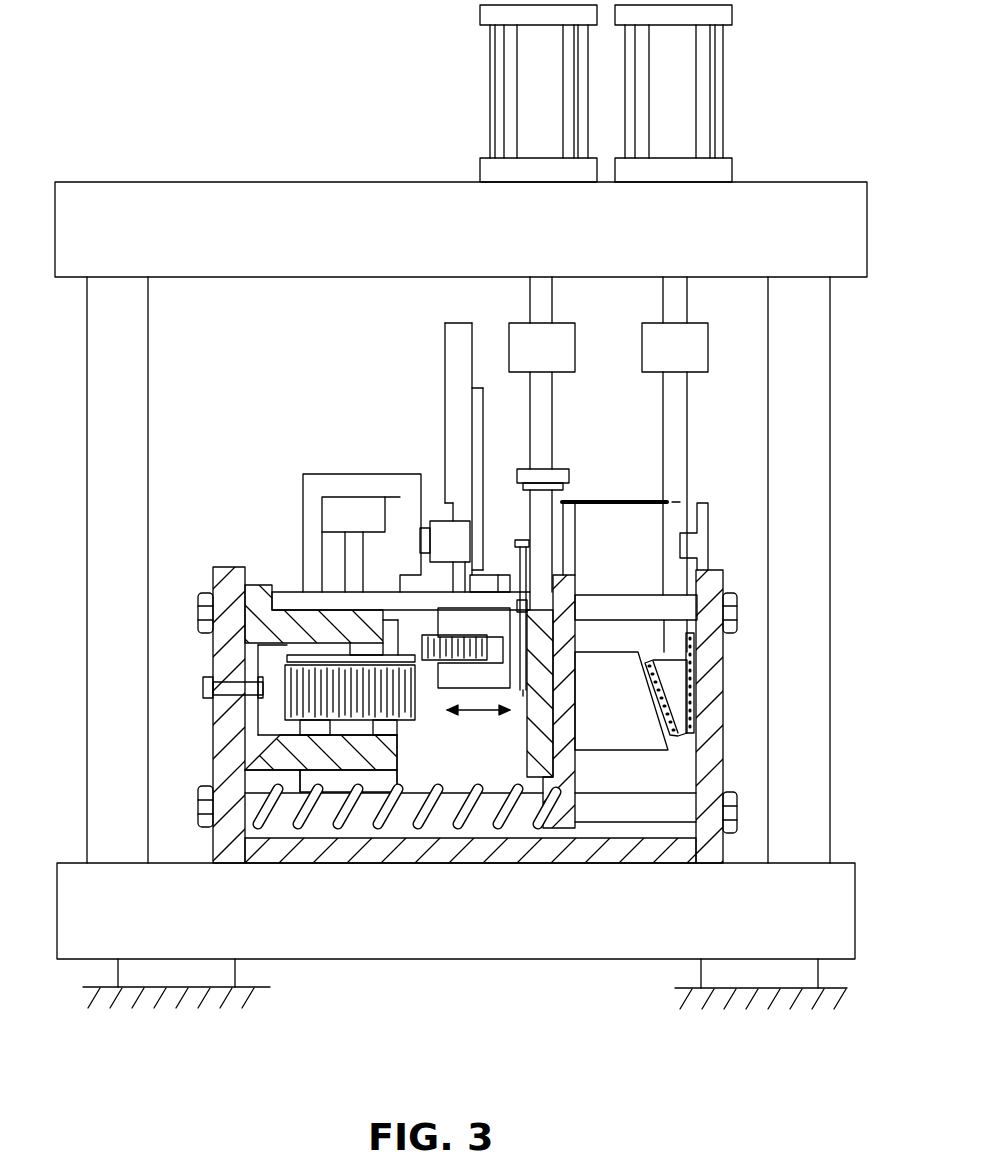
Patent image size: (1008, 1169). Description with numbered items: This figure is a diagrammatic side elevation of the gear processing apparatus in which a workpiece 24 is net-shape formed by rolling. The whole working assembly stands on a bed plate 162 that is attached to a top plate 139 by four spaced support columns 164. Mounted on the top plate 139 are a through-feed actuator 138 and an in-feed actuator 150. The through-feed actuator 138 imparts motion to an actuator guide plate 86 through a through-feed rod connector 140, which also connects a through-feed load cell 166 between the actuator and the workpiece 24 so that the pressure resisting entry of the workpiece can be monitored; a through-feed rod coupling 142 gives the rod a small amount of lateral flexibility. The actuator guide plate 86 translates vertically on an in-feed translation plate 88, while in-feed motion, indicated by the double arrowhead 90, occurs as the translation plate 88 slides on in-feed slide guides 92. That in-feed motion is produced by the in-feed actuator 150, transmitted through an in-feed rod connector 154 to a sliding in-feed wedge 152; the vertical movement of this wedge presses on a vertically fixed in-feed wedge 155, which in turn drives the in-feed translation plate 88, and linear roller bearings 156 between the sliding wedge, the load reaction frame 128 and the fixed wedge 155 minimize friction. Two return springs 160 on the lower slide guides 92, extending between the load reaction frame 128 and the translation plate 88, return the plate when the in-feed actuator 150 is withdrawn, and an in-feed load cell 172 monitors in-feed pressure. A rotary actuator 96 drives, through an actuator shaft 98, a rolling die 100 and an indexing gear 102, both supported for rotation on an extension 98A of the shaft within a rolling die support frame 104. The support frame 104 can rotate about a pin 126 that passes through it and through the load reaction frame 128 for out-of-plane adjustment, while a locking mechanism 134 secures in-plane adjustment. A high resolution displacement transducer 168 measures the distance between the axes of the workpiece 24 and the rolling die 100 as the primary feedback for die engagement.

The workpiece 24 is at (425, 657).
The actuator guide plate 86 is at (540, 768).
The in-feed translation plate 88 is at (561, 812).
The double arrowhead 90 is at (483, 712).
The in-feed slide guides 92 is at (607, 603).
The rotary actuator 96 is at (351, 507).
The actuator shaft 98 is at (353, 557).
The extension of the actuator shaft 98A is at (350, 652).
The rolling die 100 is at (400, 707).
The indexing gear 102 is at (287, 660).
The rolling die support frame 104 is at (282, 755).
The pin 126 is at (233, 689).
The load reaction frame 128 is at (233, 757).
The locking mechanism 134 is at (534, 565).
The through-feed actuator 138 is at (537, 79).
The top plate 139 is at (124, 219).
The through-feed rod connector 140 is at (540, 423).
The through-feed rod coupling 142 is at (553, 478).
The in-feed actuator 150 is at (673, 117).
The sliding in-feed wedge 152 is at (670, 672).
The in-feed rod connector 154 is at (673, 448).
The in-feed wedge 155 is at (622, 712).
The linear roller bearings 156 is at (694, 710).
The return springs 160 is at (353, 800).
The bed plate 162 is at (390, 922).
The support columns 164 is at (797, 453).
The through-feed load cell 166 is at (562, 345).
The high resolution displacement transducer 168 is at (705, 515).
The in-feed load cell 172 is at (686, 352).